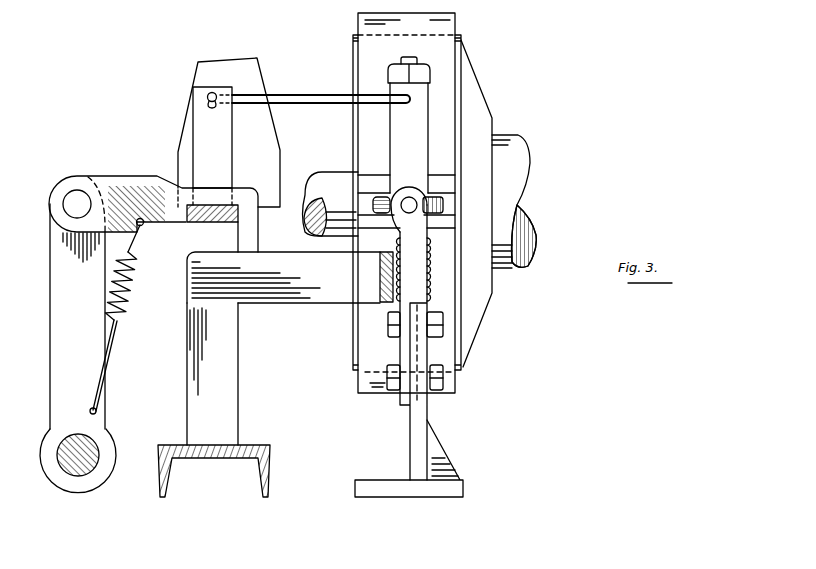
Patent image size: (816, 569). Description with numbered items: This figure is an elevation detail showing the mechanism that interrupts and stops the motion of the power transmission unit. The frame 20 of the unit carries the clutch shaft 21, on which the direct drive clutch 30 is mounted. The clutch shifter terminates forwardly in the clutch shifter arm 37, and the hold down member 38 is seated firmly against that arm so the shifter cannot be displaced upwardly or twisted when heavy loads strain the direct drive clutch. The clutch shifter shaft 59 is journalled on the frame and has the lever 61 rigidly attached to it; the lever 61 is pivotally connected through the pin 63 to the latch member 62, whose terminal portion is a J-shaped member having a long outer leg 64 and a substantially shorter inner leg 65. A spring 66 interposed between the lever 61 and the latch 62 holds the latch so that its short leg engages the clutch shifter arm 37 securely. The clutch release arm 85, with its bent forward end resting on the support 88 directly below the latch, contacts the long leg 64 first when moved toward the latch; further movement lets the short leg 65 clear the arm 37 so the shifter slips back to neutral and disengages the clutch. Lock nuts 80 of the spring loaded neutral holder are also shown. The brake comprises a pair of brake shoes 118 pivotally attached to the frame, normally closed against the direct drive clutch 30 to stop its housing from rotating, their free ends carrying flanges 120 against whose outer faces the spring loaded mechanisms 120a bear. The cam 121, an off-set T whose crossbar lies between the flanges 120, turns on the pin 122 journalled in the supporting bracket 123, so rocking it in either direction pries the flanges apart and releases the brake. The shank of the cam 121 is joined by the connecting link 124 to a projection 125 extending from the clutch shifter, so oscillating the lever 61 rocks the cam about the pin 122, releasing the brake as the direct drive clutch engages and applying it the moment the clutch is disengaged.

The frame 20 is at (170, 476).
The clutch shaft 21 is at (303, 212).
The direct drive clutch 30 is at (497, 97).
The clutch shifter arm 37 is at (225, 222).
The hold down member 38 is at (180, 168).
The clutch shifter shaft 59 is at (93, 447).
The lever 61 is at (50, 340).
The latch member 62 is at (124, 178).
The pin 63 is at (70, 198).
The outer leg 64 is at (253, 238).
The inner leg 65 is at (182, 223).
The spring 66 is at (125, 312).
The lock nuts 80 is at (393, 67).
The clutch release arm 85 is at (388, 305).
The support 88 is at (238, 336).
The brake shoes 118 is at (447, 23).
The flanges 120 is at (372, 176).
The spring loaded mechanisms 120a is at (385, 290).
The cam 121 is at (395, 128).
The pin 122 is at (412, 199).
The supporting bracket 123 is at (408, 272).
The connecting link 124 is at (302, 95).
The projection 125 is at (203, 128).